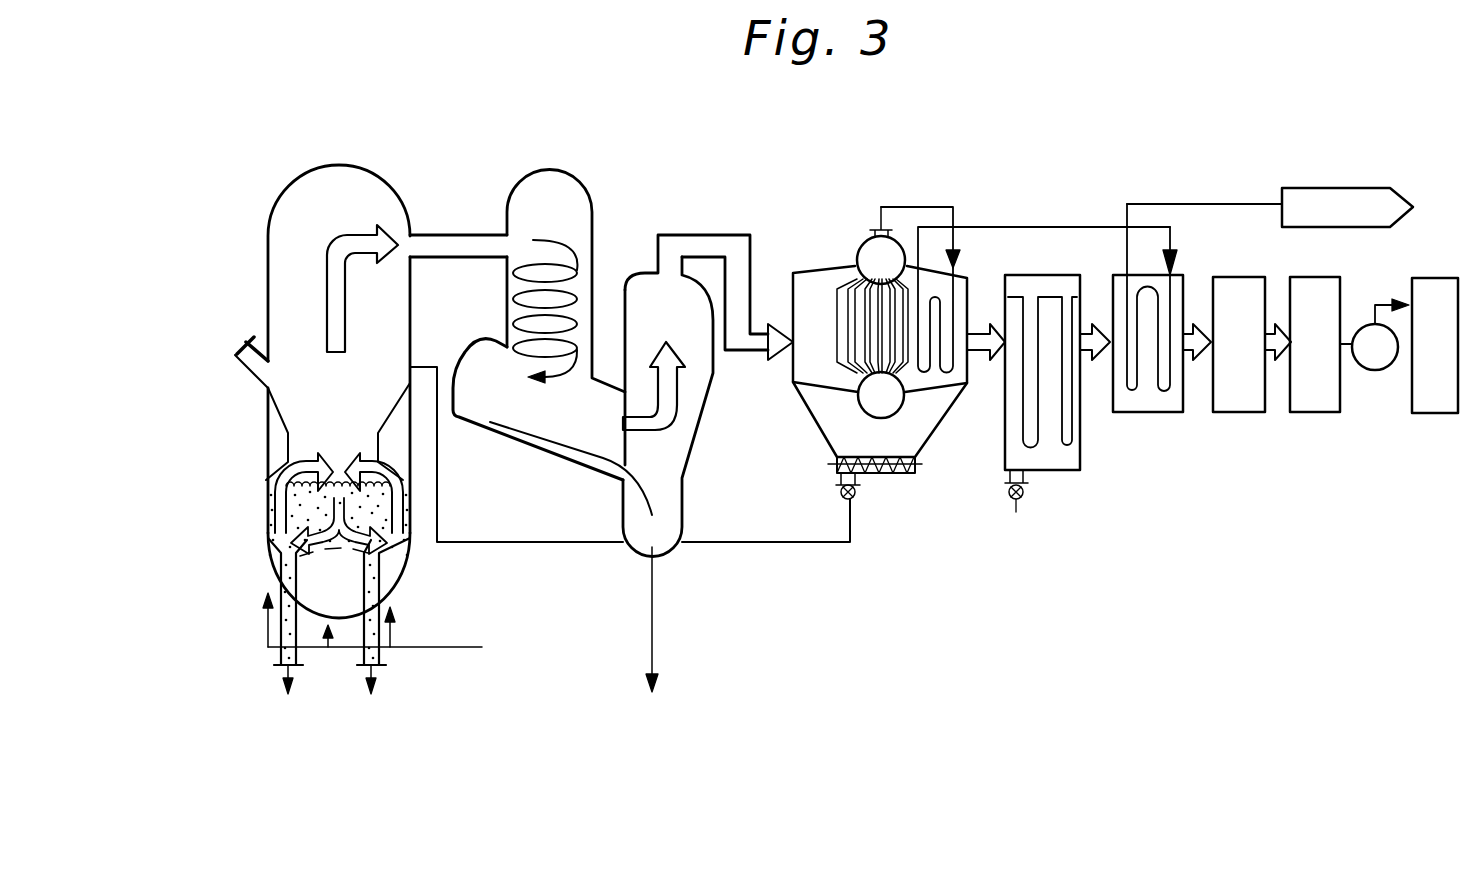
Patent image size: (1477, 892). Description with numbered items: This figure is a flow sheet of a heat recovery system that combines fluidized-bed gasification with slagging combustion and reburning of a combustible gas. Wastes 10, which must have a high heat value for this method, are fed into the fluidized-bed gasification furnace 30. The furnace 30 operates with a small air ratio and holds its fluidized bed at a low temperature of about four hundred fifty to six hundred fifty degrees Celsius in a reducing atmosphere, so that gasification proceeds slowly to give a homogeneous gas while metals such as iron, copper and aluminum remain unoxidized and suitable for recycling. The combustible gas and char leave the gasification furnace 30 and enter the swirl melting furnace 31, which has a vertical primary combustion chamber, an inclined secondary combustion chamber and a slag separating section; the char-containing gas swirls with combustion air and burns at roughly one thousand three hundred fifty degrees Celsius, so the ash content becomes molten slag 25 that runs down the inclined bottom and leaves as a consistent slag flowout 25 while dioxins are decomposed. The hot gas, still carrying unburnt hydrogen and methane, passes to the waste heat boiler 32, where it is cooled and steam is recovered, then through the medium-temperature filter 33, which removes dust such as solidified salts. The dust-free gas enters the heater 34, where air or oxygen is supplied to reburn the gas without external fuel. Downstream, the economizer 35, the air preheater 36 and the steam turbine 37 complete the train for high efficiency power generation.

The wastes 10 is at (243, 346).
The molten slag 25 is at (590, 458).
The fluidized-bed gasification furnace 30 is at (413, 313).
The swirl melting furnace 31 is at (507, 438).
The waste heat boiler 32 is at (815, 417).
The medium-temperature filter 33 is at (1000, 411).
The heater 34 is at (1145, 412).
The economizer 35 is at (1240, 412).
The air preheater 36 is at (1322, 412).
The steam turbine 37 is at (1357, 227).